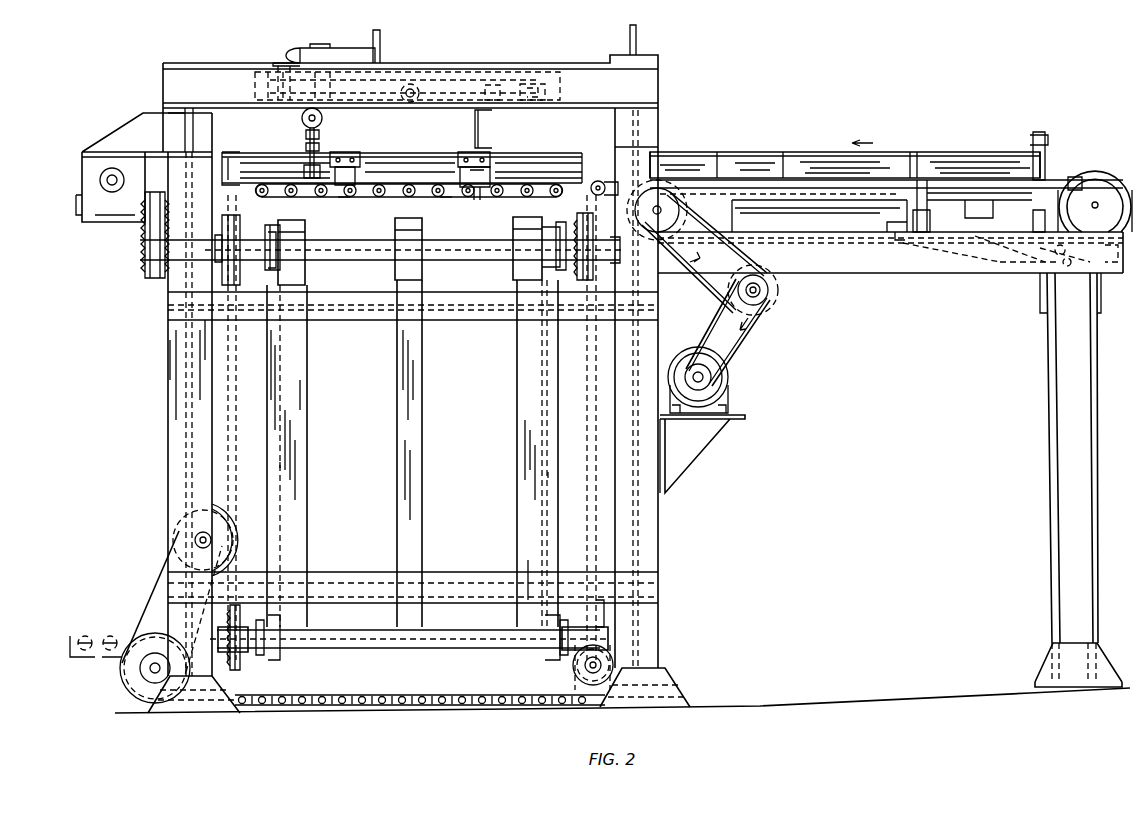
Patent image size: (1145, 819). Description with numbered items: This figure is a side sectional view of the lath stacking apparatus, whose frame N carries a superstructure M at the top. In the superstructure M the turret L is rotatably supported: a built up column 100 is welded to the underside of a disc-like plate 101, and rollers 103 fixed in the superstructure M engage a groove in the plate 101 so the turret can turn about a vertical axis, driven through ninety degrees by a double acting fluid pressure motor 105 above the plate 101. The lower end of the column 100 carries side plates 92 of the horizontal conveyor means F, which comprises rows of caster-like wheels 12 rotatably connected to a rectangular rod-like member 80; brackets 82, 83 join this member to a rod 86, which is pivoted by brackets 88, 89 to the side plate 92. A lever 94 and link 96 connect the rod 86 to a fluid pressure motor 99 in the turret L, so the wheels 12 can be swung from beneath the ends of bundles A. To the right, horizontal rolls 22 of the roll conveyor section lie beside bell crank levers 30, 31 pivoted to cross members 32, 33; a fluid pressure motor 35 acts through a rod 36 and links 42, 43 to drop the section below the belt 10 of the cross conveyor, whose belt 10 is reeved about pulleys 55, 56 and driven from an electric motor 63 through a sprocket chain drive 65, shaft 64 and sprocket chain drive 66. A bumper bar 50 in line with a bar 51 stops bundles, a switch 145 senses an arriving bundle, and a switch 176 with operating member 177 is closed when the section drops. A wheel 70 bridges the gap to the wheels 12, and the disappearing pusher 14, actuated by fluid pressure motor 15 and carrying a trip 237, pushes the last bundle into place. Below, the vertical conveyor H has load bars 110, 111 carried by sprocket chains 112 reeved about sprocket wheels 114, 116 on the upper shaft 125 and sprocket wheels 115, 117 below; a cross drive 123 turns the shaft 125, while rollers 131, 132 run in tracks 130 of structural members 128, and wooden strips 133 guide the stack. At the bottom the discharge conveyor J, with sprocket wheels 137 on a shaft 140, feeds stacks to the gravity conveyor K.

The double acting fluid pressure motor 105 is at (339, 55).
The turret L is at (463, 74).
The disc-like plate 101 is at (505, 78).
The superstructure M is at (662, 77).
The rollers 103 is at (420, 94).
The double acting fluid pressure motor 99 is at (302, 118).
The link 96 is at (305, 134).
The lever 94 is at (305, 148).
The horizontal conveyor means F is at (228, 154).
The bracket 89 is at (356, 162).
The rod 86 is at (385, 160).
The bracket 88 is at (465, 160).
The bracket 82 is at (490, 166).
The side plate 92 is at (560, 160).
The built up column 100 is at (486, 131).
The cross drive 123 is at (82, 162).
The roller 132 is at (270, 226).
The bracket 83 is at (344, 197).
The rectangular rod-like member 80 is at (446, 195).
The caster-like wheels 12 is at (523, 192).
The wheel 70 is at (596, 194).
The disappearing pusher 14 is at (703, 160).
The bundles of plaster laths A is at (705, 163).
The belt 10 is at (778, 162).
The bar 51 is at (815, 156).
The bumper bar 50 is at (933, 152).
The switch 145 is at (1037, 141).
The cross member 32 is at (1080, 175).
The pulley 55 is at (1100, 182).
The trip 237 is at (818, 200).
The double acting fluid pressure motor 15 is at (858, 200).
The cross member 33 is at (888, 228).
The horizontal rolls 22 is at (960, 212).
The bell crank lever 30 is at (1035, 228).
The pulley 56 is at (680, 232).
The sprocket wheel 116 is at (215, 262).
The roller 131 is at (306, 275).
The upper shaft 125 is at (356, 256).
The load bar 110 is at (430, 258).
The sprocket wheel 114 is at (583, 262).
The sprocket chain drive 66 is at (718, 290).
The shaft 64 is at (778, 298).
The sprocket chain drive 65 is at (752, 328).
The electric motor 63 is at (729, 380).
The bell crank lever 31 is at (894, 238).
The link 43 is at (925, 262).
The link 42 is at (990, 262).
The rod 36 is at (1028, 268).
The operating member 177 is at (1055, 278).
The switch 176 is at (1103, 278).
The double acting fluid pressure operated motor 35 is at (1123, 258).
The frame N is at (163, 347).
The wooden strips 133 is at (298, 350).
The sprocket chains 112 is at (237, 394).
The vertical conveyor H is at (582, 378).
The structural members 128 is at (276, 422).
The grooves or tracks 130 is at (280, 462).
The gravity conveyor K is at (100, 637).
The sprocket wheel 137 is at (135, 672).
The sprocket wheel 117 is at (245, 660).
The load bar 111 is at (362, 646).
The sprocket wheel 115 is at (604, 626).
The shaft 140 is at (612, 662).
The discharge conveyor J is at (322, 708).